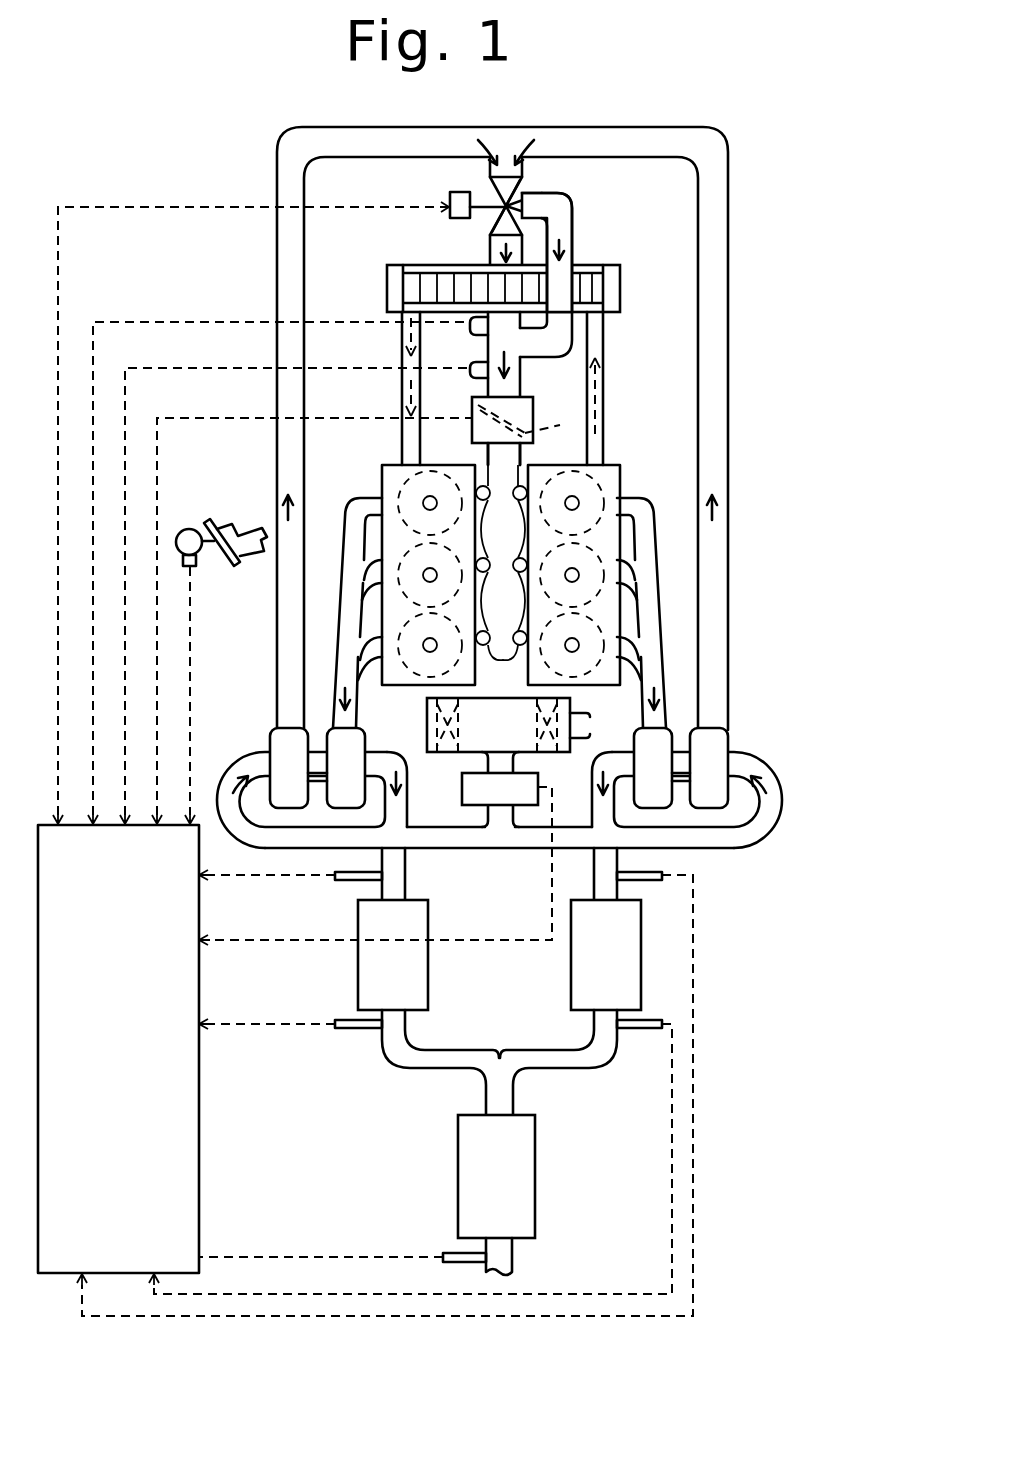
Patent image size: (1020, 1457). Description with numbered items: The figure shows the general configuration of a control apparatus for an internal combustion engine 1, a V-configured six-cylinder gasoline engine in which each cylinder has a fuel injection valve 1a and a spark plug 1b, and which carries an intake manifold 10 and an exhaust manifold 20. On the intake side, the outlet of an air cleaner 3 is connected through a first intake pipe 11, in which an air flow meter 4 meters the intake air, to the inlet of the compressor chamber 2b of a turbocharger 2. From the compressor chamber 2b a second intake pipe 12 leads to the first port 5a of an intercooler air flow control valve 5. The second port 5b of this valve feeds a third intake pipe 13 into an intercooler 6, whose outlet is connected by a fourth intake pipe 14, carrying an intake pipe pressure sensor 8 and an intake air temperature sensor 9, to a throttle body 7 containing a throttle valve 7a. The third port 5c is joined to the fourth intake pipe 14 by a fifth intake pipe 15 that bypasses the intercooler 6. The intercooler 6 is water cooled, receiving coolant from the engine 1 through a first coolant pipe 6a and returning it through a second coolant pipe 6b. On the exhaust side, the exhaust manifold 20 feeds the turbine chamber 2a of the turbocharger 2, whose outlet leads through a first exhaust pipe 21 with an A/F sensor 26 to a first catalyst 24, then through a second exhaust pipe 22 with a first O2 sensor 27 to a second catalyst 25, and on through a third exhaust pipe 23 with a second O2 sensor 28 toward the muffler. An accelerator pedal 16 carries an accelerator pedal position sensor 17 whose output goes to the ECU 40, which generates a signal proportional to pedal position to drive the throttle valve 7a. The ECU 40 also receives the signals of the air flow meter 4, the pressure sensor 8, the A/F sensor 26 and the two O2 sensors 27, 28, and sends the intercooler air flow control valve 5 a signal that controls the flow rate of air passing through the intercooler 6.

The internal combustion engine 1 is at (509, 530).
The fuel injection valve 1a is at (470, 480).
The spark plug 1b is at (418, 502).
The turbocharger 2 is at (519, 768).
The turbine chamber 2a is at (333, 783).
The compressor chamber 2b is at (276, 783).
The air cleaner 3 is at (427, 717).
The air flow meter 4 is at (462, 790).
The intercooler air flow control valve 5 is at (548, 182).
The first port 5a is at (493, 188).
The second port 5b is at (493, 221).
The third port 5c is at (534, 194).
The intercooler 6 is at (383, 286).
The first coolant pipe 6a is at (603, 340).
The second coolant pipe 6b is at (402, 400).
The throttle body 7 is at (533, 416).
The throttle valve 7a is at (554, 423).
The intake pipe pressure sensor 8 is at (470, 326).
The intake air temperature sensor 9 is at (470, 372).
The intake manifold 10 is at (522, 456).
The first intake pipe 11 is at (483, 850).
The second intake pipe 12 is at (277, 278).
The third intake pipe 13 is at (488, 258).
The fourth intake pipe 14 is at (520, 376).
The fifth intake pipe 15 is at (572, 250).
The accelerator pedal 16 is at (233, 568).
The accelerator pedal position sensor 17 is at (192, 528).
The exhaust manifold 20 is at (362, 505).
The first exhaust pipe 21 is at (405, 876).
The second exhaust pipe 22 is at (430, 1049).
The third exhaust pipe 23 is at (512, 1256).
The first catalyst 24 is at (358, 976).
The second catalyst 25 is at (535, 1167).
The A/F sensor 26 is at (342, 881).
The first O2 sensor 27 is at (356, 1030).
The second O2 sensor 28 is at (446, 1253).
The ECU 40 is at (96, 920).